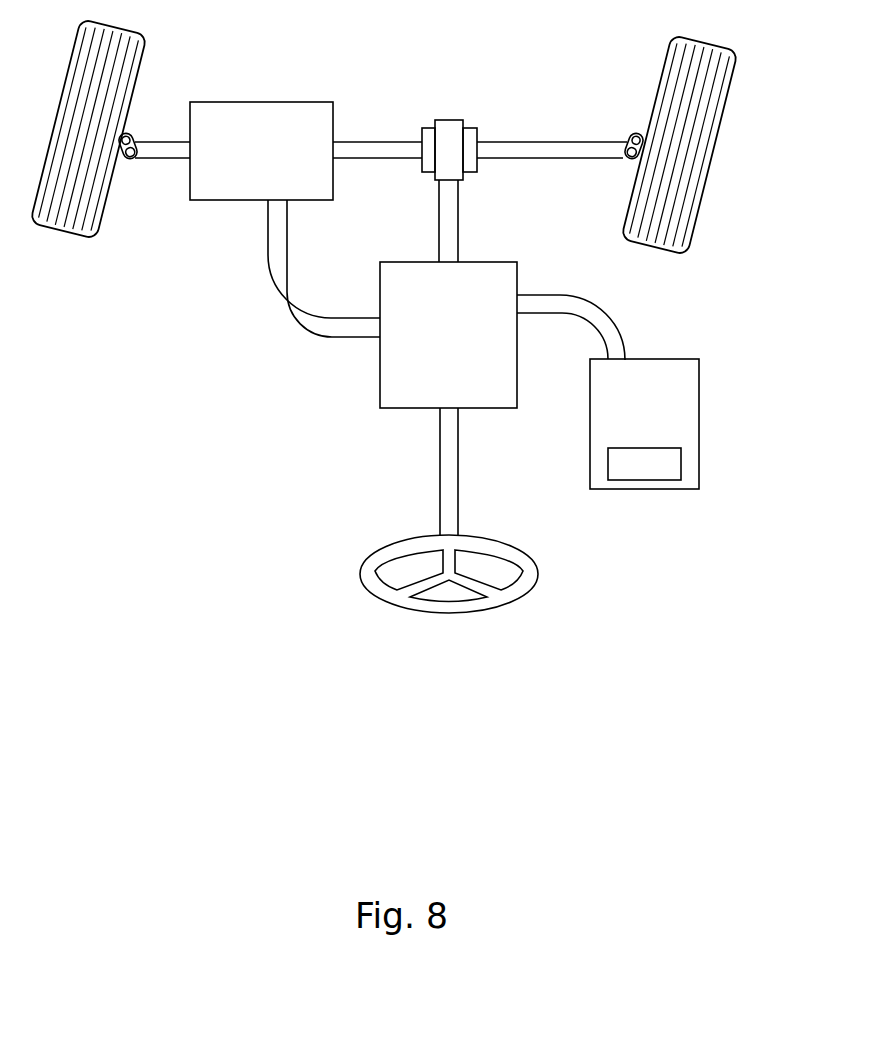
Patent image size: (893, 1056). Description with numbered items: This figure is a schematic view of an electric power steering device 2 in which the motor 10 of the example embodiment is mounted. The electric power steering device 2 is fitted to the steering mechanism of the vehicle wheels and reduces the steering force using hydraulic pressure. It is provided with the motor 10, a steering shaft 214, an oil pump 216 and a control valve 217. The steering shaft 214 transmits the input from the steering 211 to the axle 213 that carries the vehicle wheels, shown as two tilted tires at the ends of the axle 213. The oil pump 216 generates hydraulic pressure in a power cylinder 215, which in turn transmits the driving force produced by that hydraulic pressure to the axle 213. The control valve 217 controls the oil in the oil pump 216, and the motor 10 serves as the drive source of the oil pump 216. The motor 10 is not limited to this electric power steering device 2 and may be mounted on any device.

The electric power steering device 2 is at (378, 467).
The motor 10 is at (652, 465).
The steering 211 is at (437, 605).
The axle 213 is at (507, 152).
The steering shaft 214 is at (448, 470).
The power cylinder 215 is at (262, 123).
The oil pump 216 is at (680, 412).
The control valve 217 is at (402, 369).